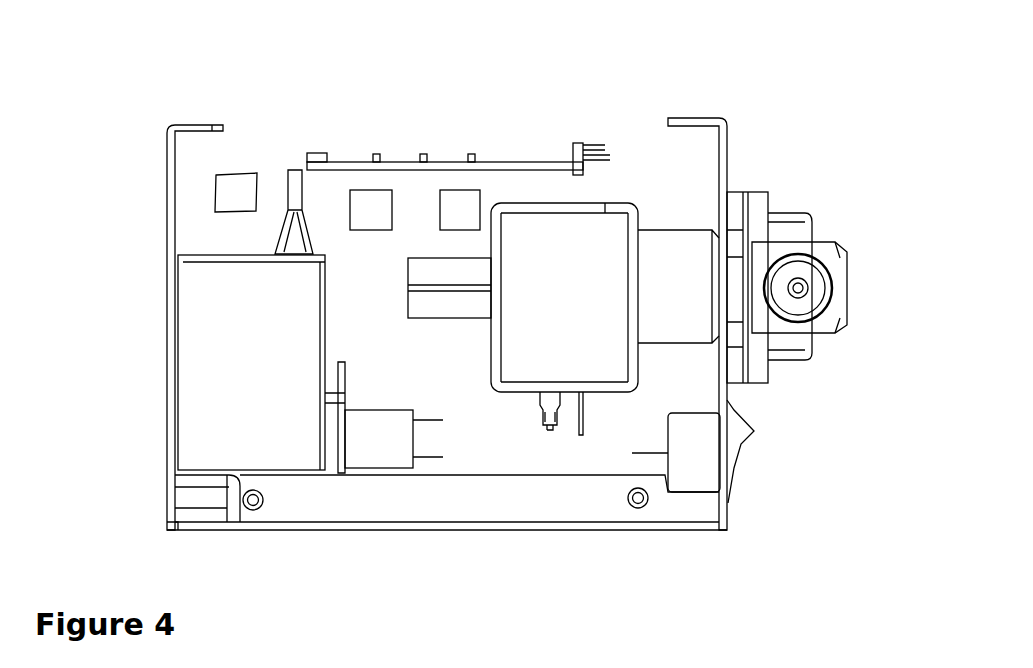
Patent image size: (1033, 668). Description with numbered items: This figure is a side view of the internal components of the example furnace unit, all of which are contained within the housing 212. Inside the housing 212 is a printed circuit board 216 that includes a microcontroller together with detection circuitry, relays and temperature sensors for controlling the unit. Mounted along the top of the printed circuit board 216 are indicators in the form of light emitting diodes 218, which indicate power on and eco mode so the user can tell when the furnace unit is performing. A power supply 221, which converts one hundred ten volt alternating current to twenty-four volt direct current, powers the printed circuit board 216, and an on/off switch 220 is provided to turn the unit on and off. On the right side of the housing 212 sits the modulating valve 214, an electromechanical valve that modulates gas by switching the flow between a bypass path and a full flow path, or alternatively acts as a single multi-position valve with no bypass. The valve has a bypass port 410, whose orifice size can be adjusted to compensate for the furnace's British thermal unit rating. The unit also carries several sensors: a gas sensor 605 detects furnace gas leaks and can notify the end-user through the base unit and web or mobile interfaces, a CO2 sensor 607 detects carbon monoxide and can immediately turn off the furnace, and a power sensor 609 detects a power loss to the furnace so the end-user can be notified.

The housing 212 is at (168, 155).
The power sensor 609 is at (216, 198).
The power supply 221 is at (243, 360).
The light emitting diodes 218 is at (375, 158).
The CO2 sensor 607 is at (380, 190).
The gas sensor 605 is at (457, 190).
The printed circuit board 216 is at (523, 166).
The modulating valve 214 is at (668, 290).
The bypass port 410 is at (800, 288).
The on/off switch 220 is at (697, 448).